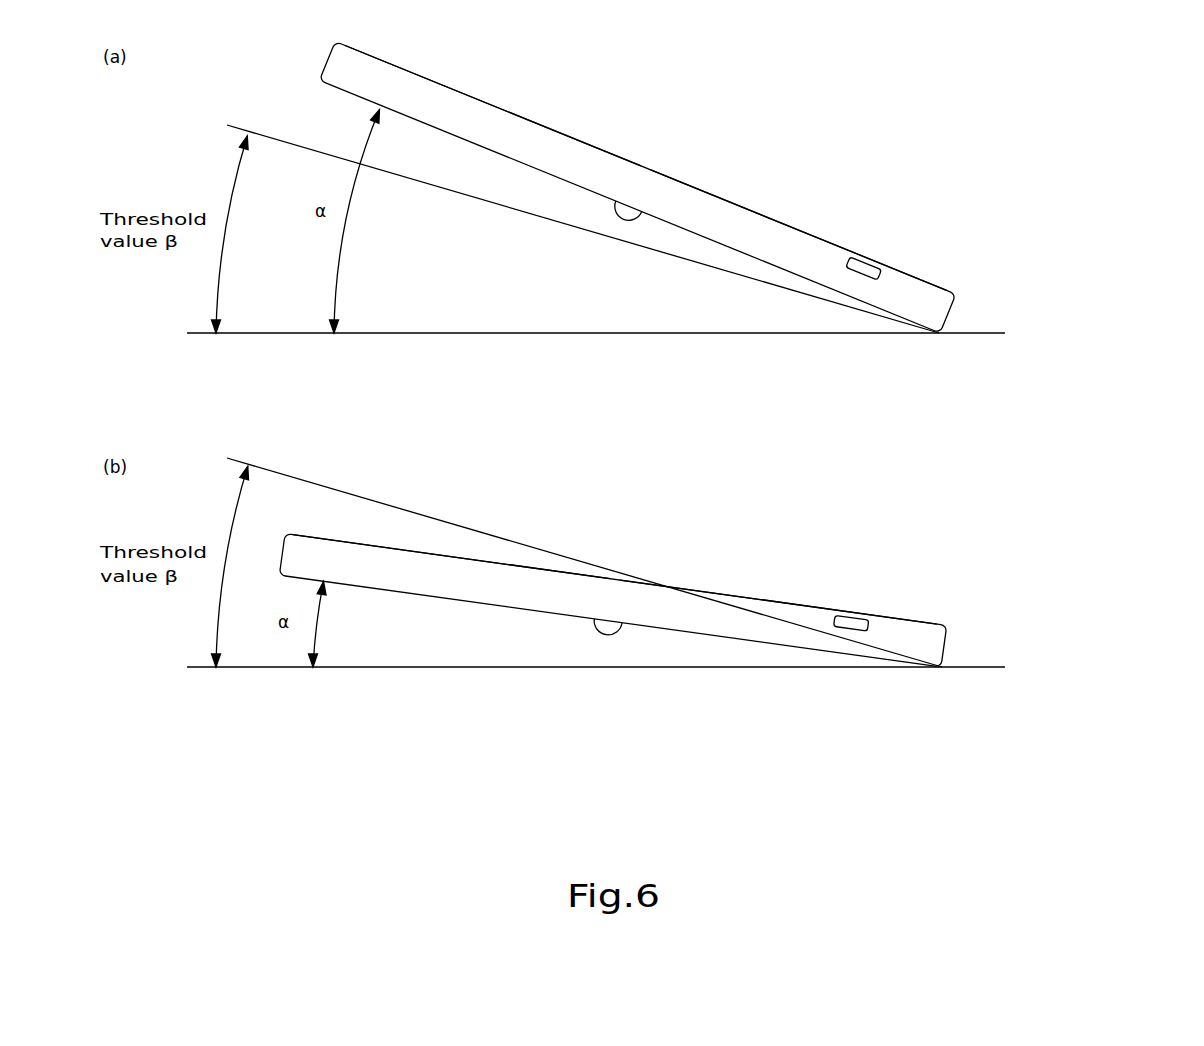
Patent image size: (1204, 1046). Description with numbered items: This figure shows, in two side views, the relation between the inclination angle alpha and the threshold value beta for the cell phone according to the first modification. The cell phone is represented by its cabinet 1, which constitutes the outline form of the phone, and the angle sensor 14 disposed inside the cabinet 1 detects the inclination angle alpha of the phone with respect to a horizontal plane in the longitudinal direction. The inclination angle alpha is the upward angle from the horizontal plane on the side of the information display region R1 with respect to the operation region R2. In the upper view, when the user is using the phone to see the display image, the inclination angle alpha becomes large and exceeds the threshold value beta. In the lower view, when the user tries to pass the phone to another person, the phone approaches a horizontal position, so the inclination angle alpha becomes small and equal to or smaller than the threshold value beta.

The cabinet 1 is at (499, 107).
The angle sensor 14 is at (872, 257).
The information display region R1 is at (547, 118).
The operation region R2 is at (792, 220).